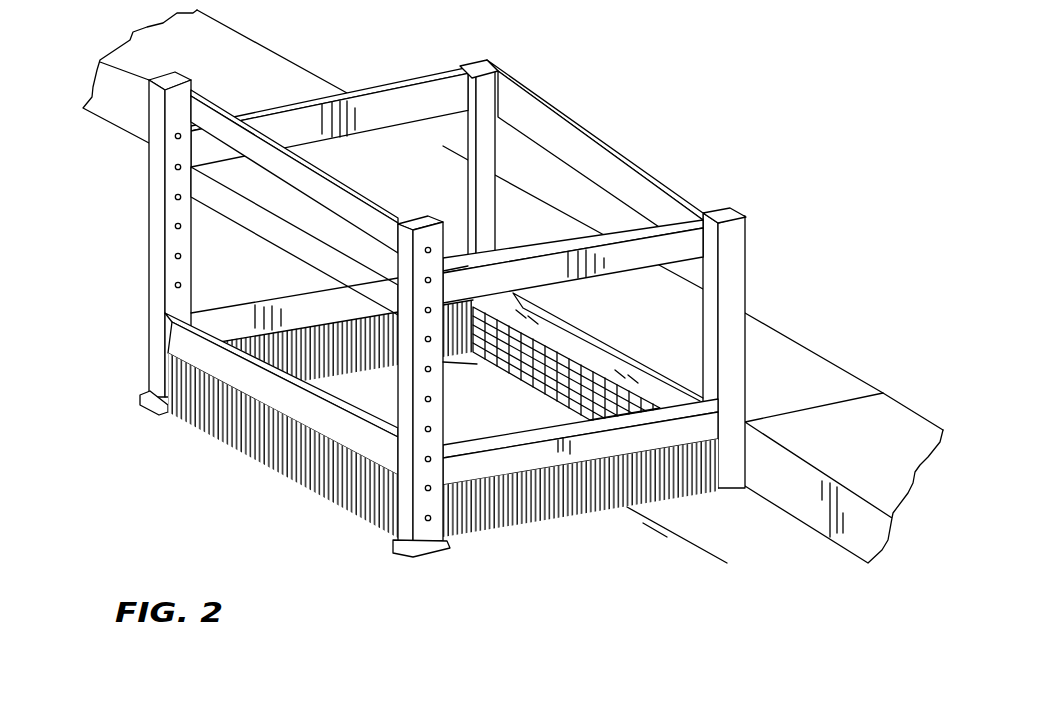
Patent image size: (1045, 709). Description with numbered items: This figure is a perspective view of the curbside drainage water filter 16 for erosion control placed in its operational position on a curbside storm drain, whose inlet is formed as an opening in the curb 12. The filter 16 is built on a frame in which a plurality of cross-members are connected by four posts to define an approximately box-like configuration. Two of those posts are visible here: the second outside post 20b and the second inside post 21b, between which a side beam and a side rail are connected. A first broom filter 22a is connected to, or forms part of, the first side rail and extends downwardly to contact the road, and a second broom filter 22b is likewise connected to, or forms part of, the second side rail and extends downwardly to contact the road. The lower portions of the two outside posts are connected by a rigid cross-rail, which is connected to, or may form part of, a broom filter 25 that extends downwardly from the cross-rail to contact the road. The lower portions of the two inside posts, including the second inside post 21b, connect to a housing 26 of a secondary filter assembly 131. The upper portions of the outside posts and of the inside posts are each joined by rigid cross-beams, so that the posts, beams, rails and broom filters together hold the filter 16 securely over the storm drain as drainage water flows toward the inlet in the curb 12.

The curb 12 is at (121, 107).
The curbside drainage water filter 16 is at (645, 126).
The second outside post 20b is at (418, 217).
The second inside post 21b is at (721, 207).
The first broom filter 22a is at (317, 345).
The second broom filter 22b is at (518, 509).
The broom filter 25 is at (291, 453).
The housing 26 is at (540, 366).
The secondary filter assembly 131 is at (579, 346).